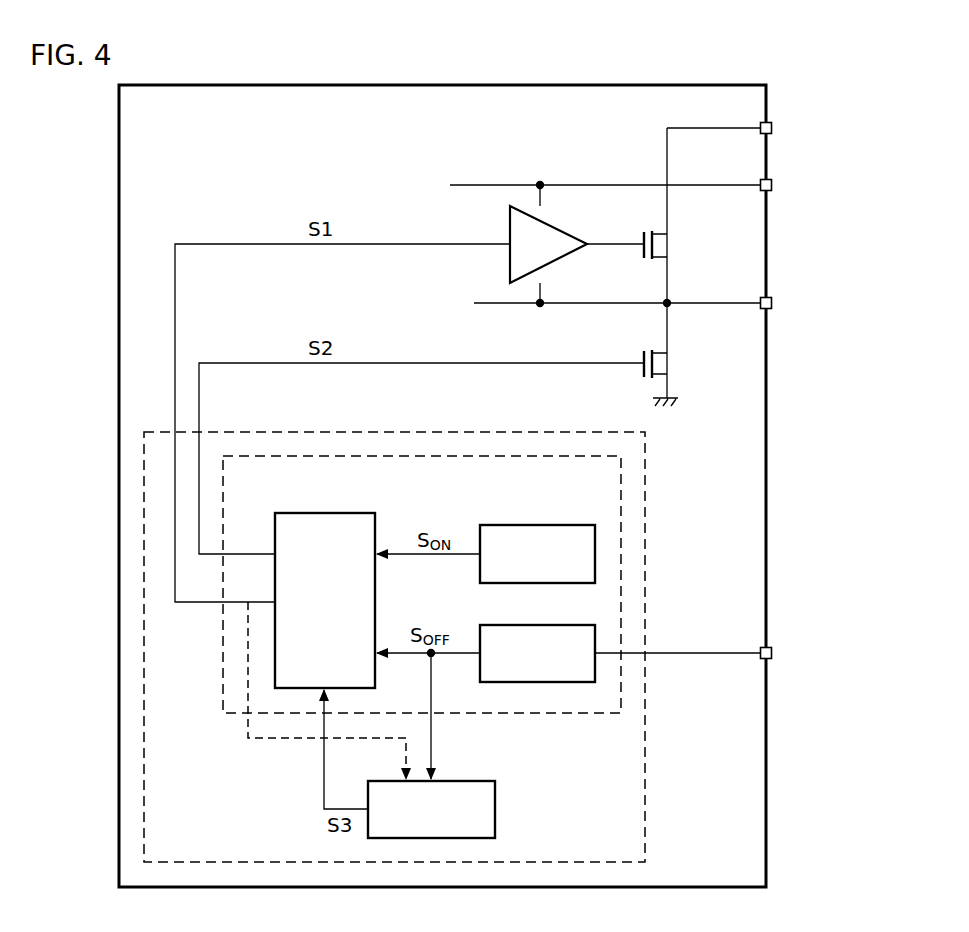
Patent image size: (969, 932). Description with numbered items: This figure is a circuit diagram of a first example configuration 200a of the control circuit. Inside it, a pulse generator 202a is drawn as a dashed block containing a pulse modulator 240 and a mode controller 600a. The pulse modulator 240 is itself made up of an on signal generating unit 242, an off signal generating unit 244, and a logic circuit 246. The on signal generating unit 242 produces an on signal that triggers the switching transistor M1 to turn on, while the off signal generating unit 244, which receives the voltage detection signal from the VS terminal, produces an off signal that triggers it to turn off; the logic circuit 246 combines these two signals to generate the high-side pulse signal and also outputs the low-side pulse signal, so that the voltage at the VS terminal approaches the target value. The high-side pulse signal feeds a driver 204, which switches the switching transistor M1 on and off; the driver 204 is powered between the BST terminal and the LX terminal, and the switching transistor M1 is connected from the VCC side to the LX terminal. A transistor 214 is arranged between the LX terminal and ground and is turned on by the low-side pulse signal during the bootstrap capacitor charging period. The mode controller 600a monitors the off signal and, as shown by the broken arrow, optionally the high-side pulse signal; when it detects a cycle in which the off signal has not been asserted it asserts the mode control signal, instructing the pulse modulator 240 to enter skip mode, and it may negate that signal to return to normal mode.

The first example configuration of the control circuit 200a is at (119, 798).
The pulse generator 202a is at (645, 793).
The driver 204 is at (552, 219).
The switching transistor M1 is at (673, 244).
The transistor 214 is at (676, 363).
The pulse modulator 240 is at (223, 683).
The on signal generating unit 242 is at (527, 524).
The off signal generating unit 244 is at (527, 624).
The logic circuit 246 is at (322, 513).
The mode controller 600a is at (497, 805).
The VCC terminal VCC is at (772, 124).
The BST terminal BST is at (772, 181).
The LX terminal LX is at (772, 300).
The VS terminal VS is at (772, 649).